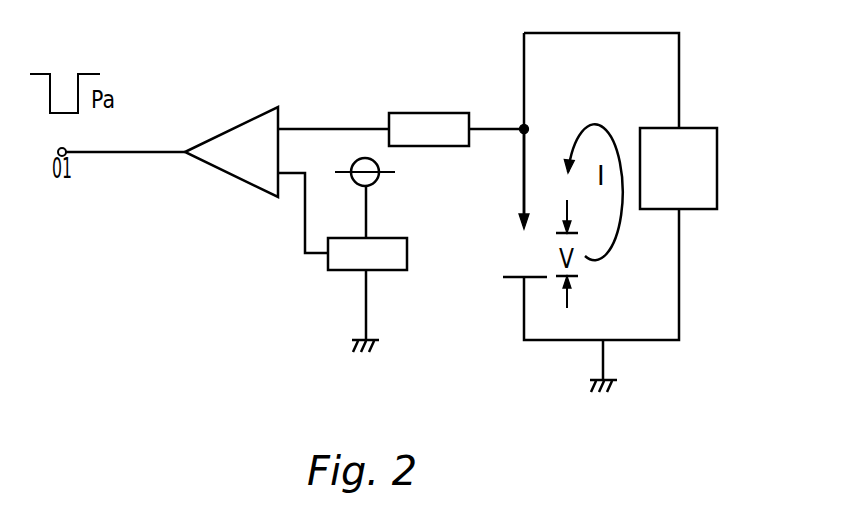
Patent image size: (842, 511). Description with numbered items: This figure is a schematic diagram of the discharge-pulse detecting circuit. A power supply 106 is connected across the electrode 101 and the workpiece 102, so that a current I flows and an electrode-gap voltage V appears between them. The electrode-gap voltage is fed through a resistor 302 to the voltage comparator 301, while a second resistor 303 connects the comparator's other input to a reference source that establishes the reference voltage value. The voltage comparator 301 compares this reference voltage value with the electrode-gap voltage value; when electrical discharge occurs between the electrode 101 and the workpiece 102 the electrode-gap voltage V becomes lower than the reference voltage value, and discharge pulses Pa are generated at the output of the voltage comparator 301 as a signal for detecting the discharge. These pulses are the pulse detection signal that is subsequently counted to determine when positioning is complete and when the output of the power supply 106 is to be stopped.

The voltage comparator 301 is at (229, 130).
The resistor 302 is at (432, 113).
The resistor 303 is at (328, 258).
The electrode 101 is at (517, 227).
The workpiece 102 is at (511, 277).
The power supply 106 is at (717, 160).